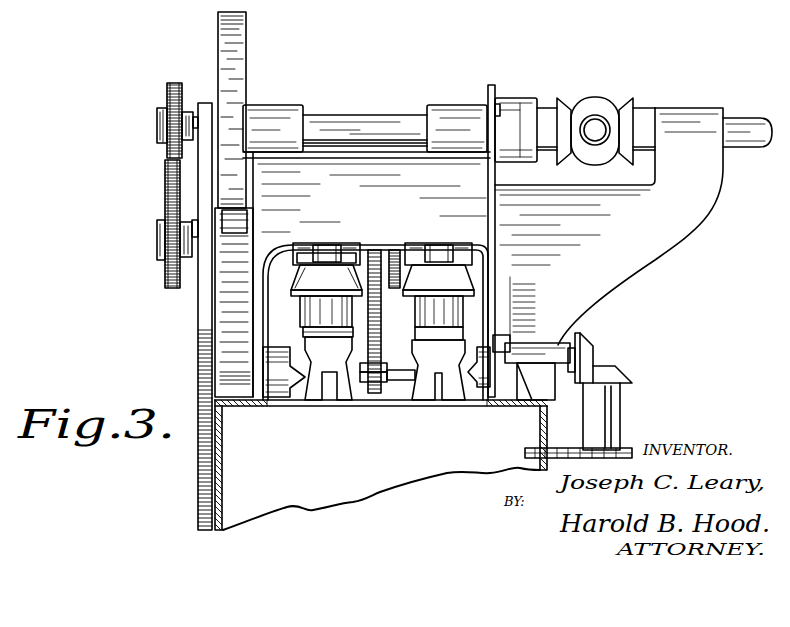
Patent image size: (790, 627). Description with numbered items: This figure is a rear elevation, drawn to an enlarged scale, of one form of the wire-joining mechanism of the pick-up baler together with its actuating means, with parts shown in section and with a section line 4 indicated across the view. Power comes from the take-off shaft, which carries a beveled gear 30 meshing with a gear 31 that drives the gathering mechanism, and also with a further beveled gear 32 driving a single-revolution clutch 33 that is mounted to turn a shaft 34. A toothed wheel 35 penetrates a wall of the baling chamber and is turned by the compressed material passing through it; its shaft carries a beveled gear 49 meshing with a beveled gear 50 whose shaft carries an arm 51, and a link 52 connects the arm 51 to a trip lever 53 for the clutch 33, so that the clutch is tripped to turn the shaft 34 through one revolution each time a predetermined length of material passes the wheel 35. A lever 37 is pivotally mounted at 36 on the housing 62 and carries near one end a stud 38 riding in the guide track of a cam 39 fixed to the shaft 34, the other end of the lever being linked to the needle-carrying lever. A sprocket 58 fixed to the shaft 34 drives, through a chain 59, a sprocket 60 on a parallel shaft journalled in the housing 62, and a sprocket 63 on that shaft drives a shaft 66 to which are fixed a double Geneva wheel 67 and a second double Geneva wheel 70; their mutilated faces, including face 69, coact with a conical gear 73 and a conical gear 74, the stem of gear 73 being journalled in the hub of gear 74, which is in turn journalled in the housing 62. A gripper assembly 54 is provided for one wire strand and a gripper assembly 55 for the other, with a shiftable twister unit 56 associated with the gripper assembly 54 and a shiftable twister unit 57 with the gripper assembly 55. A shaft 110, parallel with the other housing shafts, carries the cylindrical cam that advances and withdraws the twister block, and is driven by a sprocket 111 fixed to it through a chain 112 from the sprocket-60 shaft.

The section line 4- 4 is at (153, 300).
The beveled gear 30 is at (603, 99).
The gear 31 is at (627, 104).
The beveled gear 32 is at (560, 99).
The single-revolution clutch 33 is at (512, 100).
The shaft 34 is at (365, 116).
The toothed wheel 35 is at (608, 458).
The pivot 36 is at (191, 222).
The lever 37 is at (198, 302).
The stud 38 is at (194, 116).
The cam 39 is at (228, 46).
The beveled gear 49 is at (618, 376).
The beveled gear 50 is at (588, 342).
The arm 51 is at (490, 403).
The link 52 is at (496, 213).
The trip lever 53 is at (498, 104).
The gripper assembly 54 is at (330, 368).
The gripper assembly 55 is at (438, 321).
The shiftable twister unit 56 is at (274, 350).
The shiftable twister unit 57 is at (483, 347).
The sprocket 58 is at (170, 83).
The chain 59 is at (165, 176).
The sprocket 60 is at (168, 279).
The housing 62 is at (427, 274).
The sprocket 63 is at (395, 289).
The shaft 66 is at (328, 245).
The double Geneva wheel 67 is at (375, 250).
The mutilated gear face 69 is at (310, 333).
The double Geneva wheel 70 is at (292, 247).
The conical gear 73 is at (322, 270).
The conical gear 74 is at (308, 288).
The shaft 110 is at (400, 381).
The sprocket 111 is at (381, 359).
The chain 112 is at (381, 344).